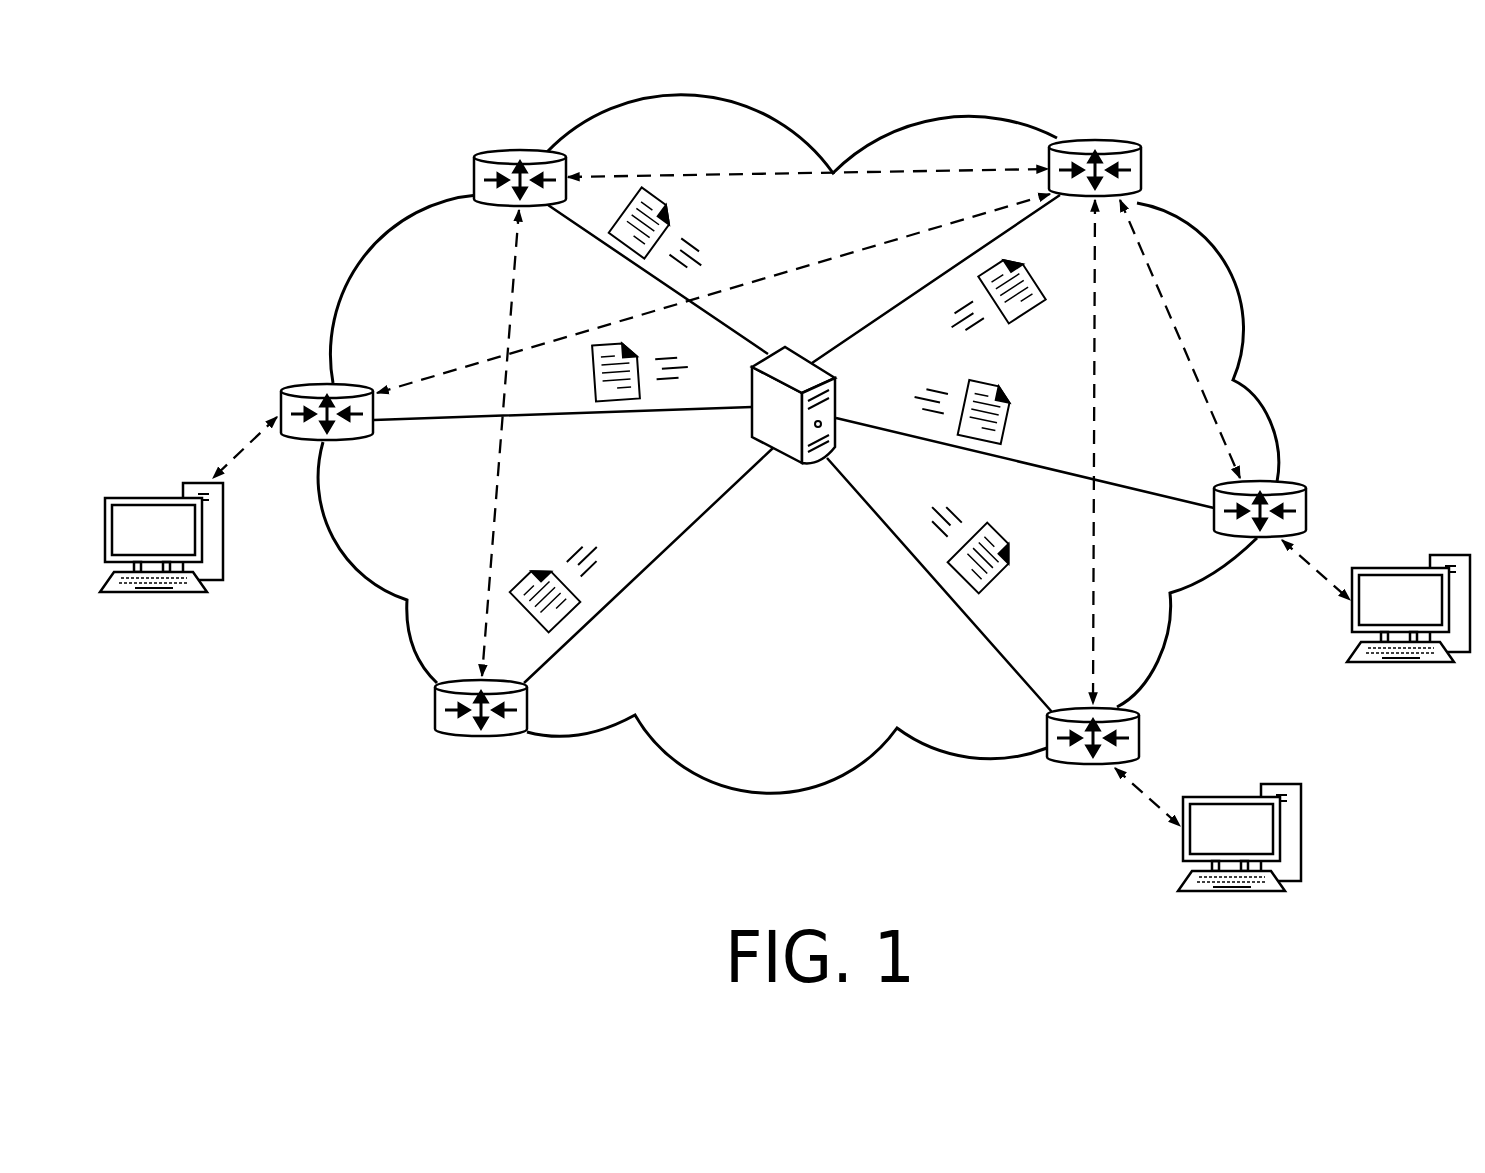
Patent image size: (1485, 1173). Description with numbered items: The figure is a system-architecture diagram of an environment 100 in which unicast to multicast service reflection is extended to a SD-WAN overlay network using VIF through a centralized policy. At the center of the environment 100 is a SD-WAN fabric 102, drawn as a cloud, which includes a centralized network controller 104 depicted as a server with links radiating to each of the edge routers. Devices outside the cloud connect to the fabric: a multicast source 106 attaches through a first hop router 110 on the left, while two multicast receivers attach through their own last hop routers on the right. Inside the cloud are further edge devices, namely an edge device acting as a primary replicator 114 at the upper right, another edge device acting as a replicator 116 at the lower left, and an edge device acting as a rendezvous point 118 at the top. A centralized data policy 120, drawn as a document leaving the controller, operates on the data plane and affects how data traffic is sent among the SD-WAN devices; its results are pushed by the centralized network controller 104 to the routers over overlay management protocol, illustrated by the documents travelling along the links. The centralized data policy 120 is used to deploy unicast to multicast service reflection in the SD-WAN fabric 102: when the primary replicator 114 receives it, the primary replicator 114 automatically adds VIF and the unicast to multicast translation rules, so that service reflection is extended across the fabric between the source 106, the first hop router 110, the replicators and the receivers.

The environment 100 is at (278, 128).
The SD-WAN fabric 102 is at (852, 695).
The centralized network controller 104 is at (772, 567).
The multicast source 106 is at (132, 690).
The first hop router (FHR) 110 is at (256, 375).
The primary replicator 114 is at (1156, 148).
The replicator 116 is at (460, 790).
The rendezvous point (RP) 118 is at (486, 139).
The centralized data policy 120 is at (566, 626).